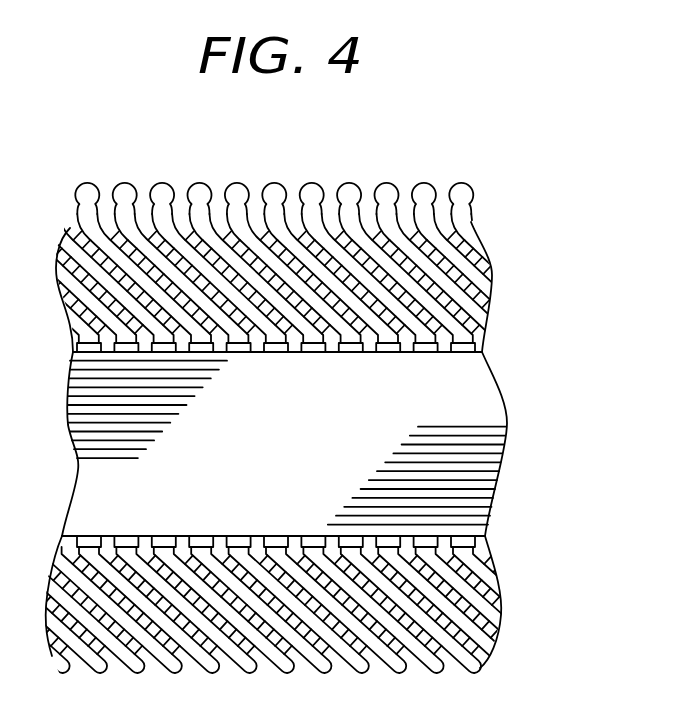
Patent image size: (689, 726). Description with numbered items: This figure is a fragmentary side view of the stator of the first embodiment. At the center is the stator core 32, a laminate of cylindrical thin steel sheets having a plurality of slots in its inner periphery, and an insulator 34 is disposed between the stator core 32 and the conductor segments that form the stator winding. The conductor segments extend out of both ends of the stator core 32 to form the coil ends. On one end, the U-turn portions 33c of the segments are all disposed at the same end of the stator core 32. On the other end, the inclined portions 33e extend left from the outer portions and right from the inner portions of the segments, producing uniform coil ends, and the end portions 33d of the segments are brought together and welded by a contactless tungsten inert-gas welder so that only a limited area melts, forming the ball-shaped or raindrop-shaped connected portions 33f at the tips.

The stator core 32 is at (480, 389).
The U-turn portions 33c is at (470, 666).
The end portions 33d is at (422, 196).
The inclined portions 33e is at (462, 257).
The connected portions 33f is at (354, 161).
The insulator 34 is at (482, 328).